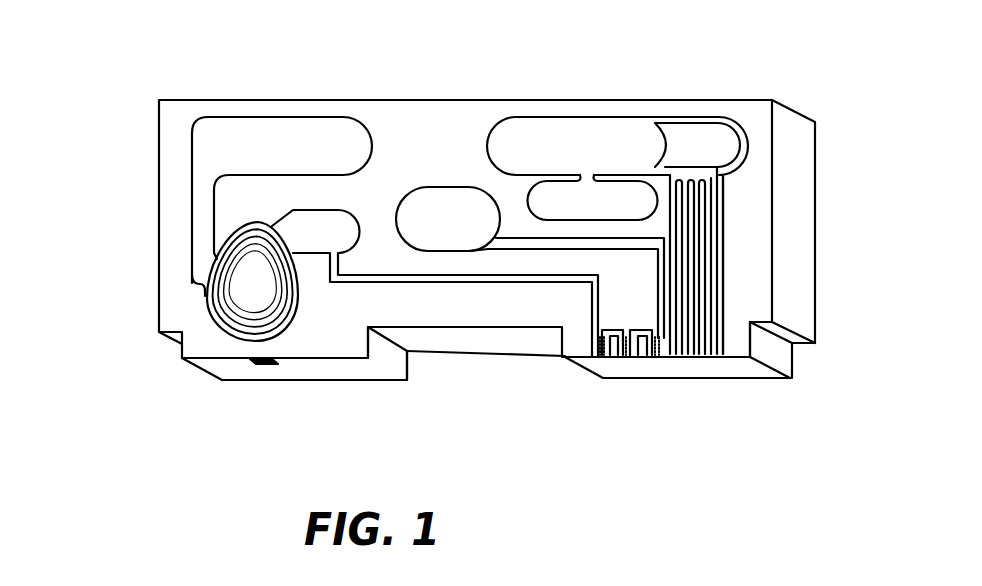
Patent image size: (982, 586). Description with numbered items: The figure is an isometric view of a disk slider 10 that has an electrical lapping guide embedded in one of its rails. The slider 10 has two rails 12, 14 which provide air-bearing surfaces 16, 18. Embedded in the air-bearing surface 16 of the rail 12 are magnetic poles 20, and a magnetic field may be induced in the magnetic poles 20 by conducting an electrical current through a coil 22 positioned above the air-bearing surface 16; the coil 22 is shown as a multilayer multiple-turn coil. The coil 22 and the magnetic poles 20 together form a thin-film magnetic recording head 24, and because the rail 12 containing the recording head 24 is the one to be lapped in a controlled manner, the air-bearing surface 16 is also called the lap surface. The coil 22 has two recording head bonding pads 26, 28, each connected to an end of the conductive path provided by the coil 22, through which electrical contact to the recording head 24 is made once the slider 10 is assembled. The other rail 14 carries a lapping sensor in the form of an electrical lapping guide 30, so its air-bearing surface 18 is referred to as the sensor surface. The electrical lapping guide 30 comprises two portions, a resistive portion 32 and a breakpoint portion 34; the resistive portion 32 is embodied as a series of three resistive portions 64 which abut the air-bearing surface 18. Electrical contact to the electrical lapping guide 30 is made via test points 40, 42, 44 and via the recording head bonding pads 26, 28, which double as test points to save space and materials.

The disk slider 10 is at (481, 7).
The rail 12 is at (408, 362).
The rail 14 is at (793, 360).
The air-bearing surface 16 is at (360, 372).
The air-bearing surface 18 is at (593, 365).
The magnetic poles 20 is at (262, 364).
The coil 22 is at (289, 318).
The thin-film magnetic recording head 24 is at (193, 291).
The recording head bonding pad 26 is at (322, 130).
The recording head bonding pad 28 is at (346, 223).
The electrical lapping guide 30 is at (663, 345).
The resistive portion 32 is at (629, 351).
The breakpoint portion 34 is at (693, 315).
The test point 40 is at (427, 197).
The test point 42 is at (535, 193).
The test point 44 is at (507, 130).
The resistive portions 64 is at (605, 324).